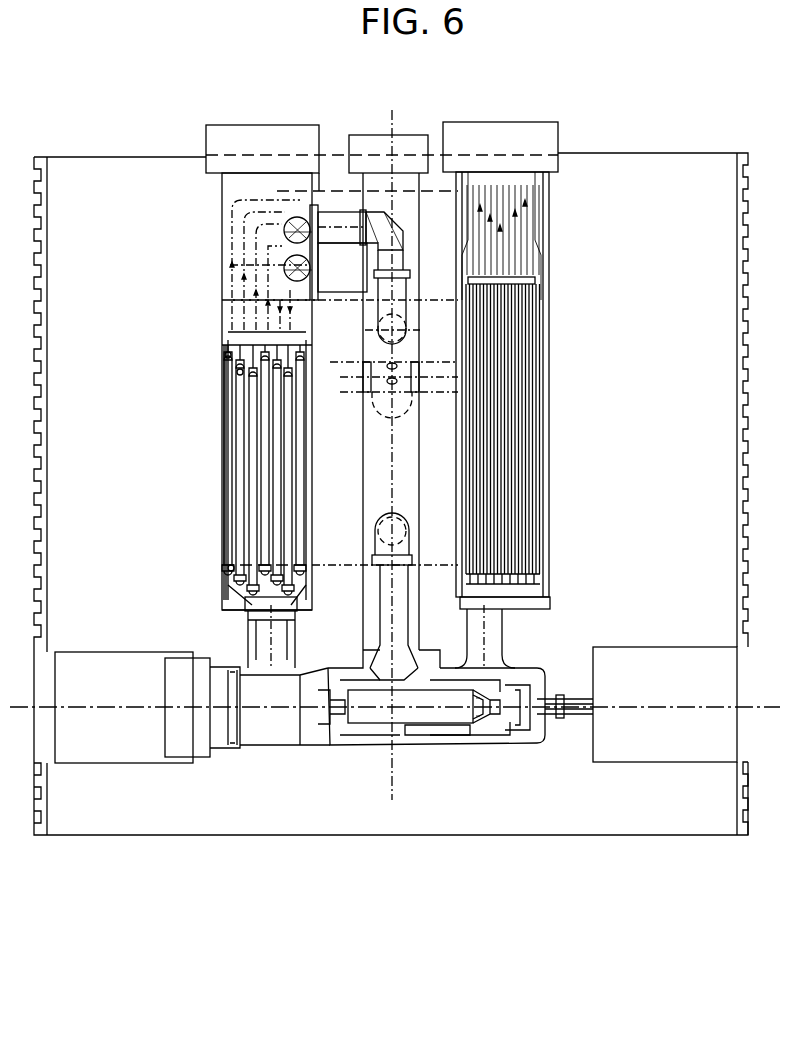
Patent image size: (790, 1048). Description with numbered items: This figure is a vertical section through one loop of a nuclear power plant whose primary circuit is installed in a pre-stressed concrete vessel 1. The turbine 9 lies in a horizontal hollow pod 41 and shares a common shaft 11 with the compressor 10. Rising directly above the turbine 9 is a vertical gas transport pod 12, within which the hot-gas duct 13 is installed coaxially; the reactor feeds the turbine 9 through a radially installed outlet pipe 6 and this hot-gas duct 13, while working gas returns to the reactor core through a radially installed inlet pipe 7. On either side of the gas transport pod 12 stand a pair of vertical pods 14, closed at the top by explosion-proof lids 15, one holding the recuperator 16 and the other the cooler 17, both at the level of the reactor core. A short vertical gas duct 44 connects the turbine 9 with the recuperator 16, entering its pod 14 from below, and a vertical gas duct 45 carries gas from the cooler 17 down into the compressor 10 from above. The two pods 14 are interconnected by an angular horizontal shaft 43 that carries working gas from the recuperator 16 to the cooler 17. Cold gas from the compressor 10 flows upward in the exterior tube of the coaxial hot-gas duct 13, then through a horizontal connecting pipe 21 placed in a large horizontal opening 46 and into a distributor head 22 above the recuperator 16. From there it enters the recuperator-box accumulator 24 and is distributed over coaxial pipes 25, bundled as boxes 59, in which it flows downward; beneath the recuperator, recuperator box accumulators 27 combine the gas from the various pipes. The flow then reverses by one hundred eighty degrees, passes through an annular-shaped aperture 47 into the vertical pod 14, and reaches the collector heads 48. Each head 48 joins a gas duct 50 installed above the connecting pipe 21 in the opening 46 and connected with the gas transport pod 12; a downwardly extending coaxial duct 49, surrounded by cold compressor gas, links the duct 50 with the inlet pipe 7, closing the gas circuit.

The pre-stressed concrete vessel 1 is at (664, 272).
The outlet pipe 6 is at (406, 523).
The inlet pipe 7 is at (396, 328).
The turbine 9 is at (394, 708).
The compressor 10 is at (482, 724).
The common shaft 11 is at (582, 706).
The gas transport pod 12 is at (403, 439).
The hot-gas duct 13 is at (401, 622).
The vertical pod 14 is at (298, 599).
The explosion-proof lid 15 is at (224, 138).
The recuperator 16 is at (300, 476).
The cooler 17 is at (525, 437).
The connecting pipe 21 is at (346, 274).
The distributor head 22 is at (305, 270).
The recuperator-box accumulator 24 is at (228, 354).
The coaxial pipe 25 is at (240, 372).
The recuperator box accumulator 27 is at (230, 568).
The horizontal hollow pod 41 is at (435, 741).
The angular horizontal shaft 43 is at (352, 384).
The vertical gas duct 44 is at (279, 651).
The vertical gas duct 45 is at (493, 637).
The horizontal opening 46 is at (328, 212).
The annular-shaped aperture 47 is at (222, 524).
The collector head 48 is at (300, 236).
The coaxial duct 49 is at (400, 248).
The gas duct 50 is at (350, 220).
The box 59 is at (222, 452).